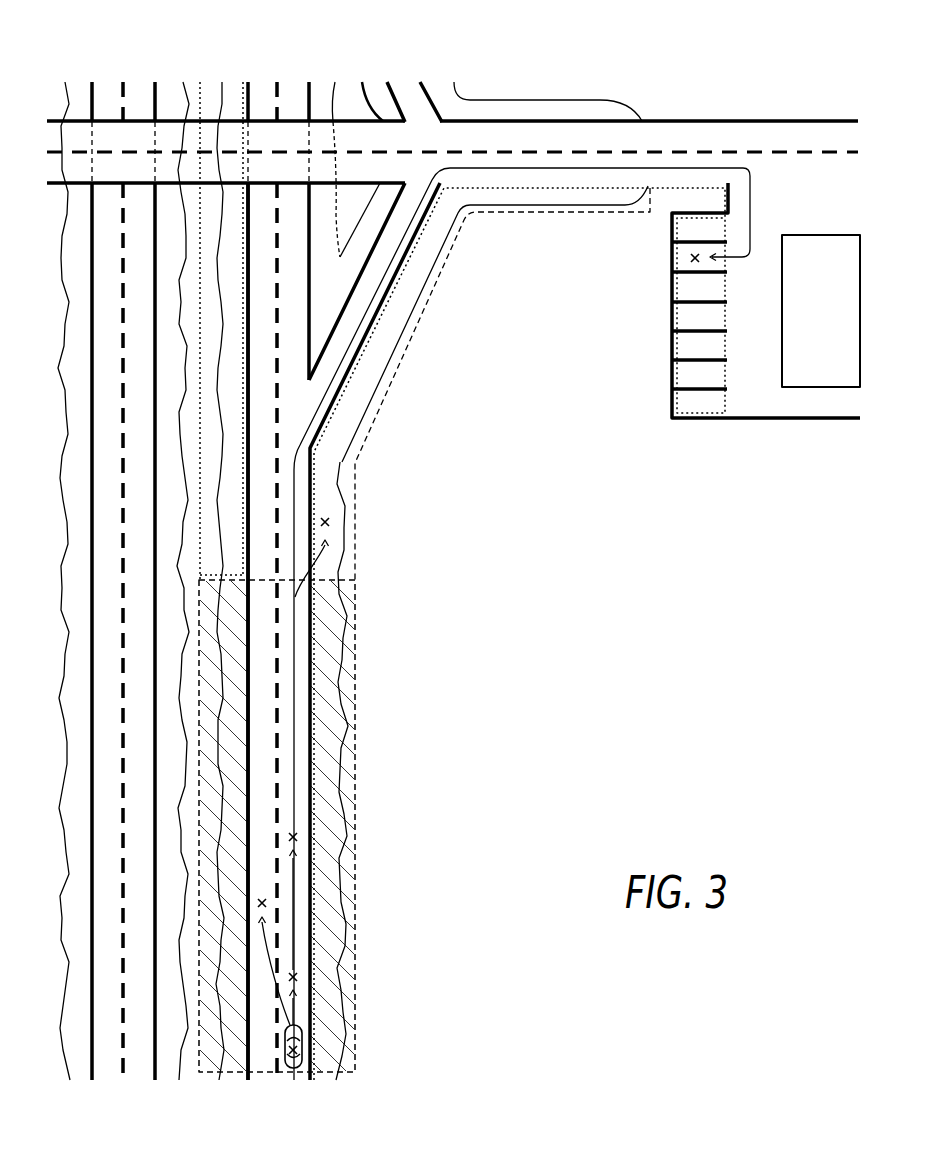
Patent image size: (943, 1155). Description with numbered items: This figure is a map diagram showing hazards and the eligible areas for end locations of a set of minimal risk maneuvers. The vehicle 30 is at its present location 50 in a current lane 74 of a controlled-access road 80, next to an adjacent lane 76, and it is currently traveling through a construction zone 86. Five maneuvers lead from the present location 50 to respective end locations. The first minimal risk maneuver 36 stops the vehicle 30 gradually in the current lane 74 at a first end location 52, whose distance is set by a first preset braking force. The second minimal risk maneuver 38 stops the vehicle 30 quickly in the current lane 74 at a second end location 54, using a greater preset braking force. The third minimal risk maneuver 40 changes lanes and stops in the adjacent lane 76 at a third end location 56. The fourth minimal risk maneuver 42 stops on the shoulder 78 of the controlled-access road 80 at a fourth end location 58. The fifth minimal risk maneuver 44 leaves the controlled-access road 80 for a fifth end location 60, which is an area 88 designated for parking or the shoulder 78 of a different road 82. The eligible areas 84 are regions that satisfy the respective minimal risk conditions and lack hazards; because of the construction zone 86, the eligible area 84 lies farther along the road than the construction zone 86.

The vehicle 30 is at (293, 1070).
The first minimal risk maneuver 36 is at (296, 905).
The second minimal risk maneuver 38 is at (296, 1010).
The third minimal risk maneuver 40 is at (258, 945).
The fourth minimal risk maneuver 42 is at (325, 556).
The fifth minimal risk maneuver 44 is at (363, 303).
The present location 50 is at (303, 1050).
The first end location 52 is at (300, 837).
The second end location 54 is at (300, 977).
The third end location 56 is at (252, 905).
The fourth end location 58 is at (332, 522).
The fifth end location 60 is at (686, 258).
The current lane 74 is at (287, 687).
The adjacent lane 76 is at (262, 762).
The shoulder 78 is at (362, 228).
The controlled-access road 80 is at (314, 743).
The road 82 is at (693, 121).
The eligible area 84 is at (557, 212).
The construction zone 86 is at (357, 665).
The area designated for parking 88 is at (672, 372).